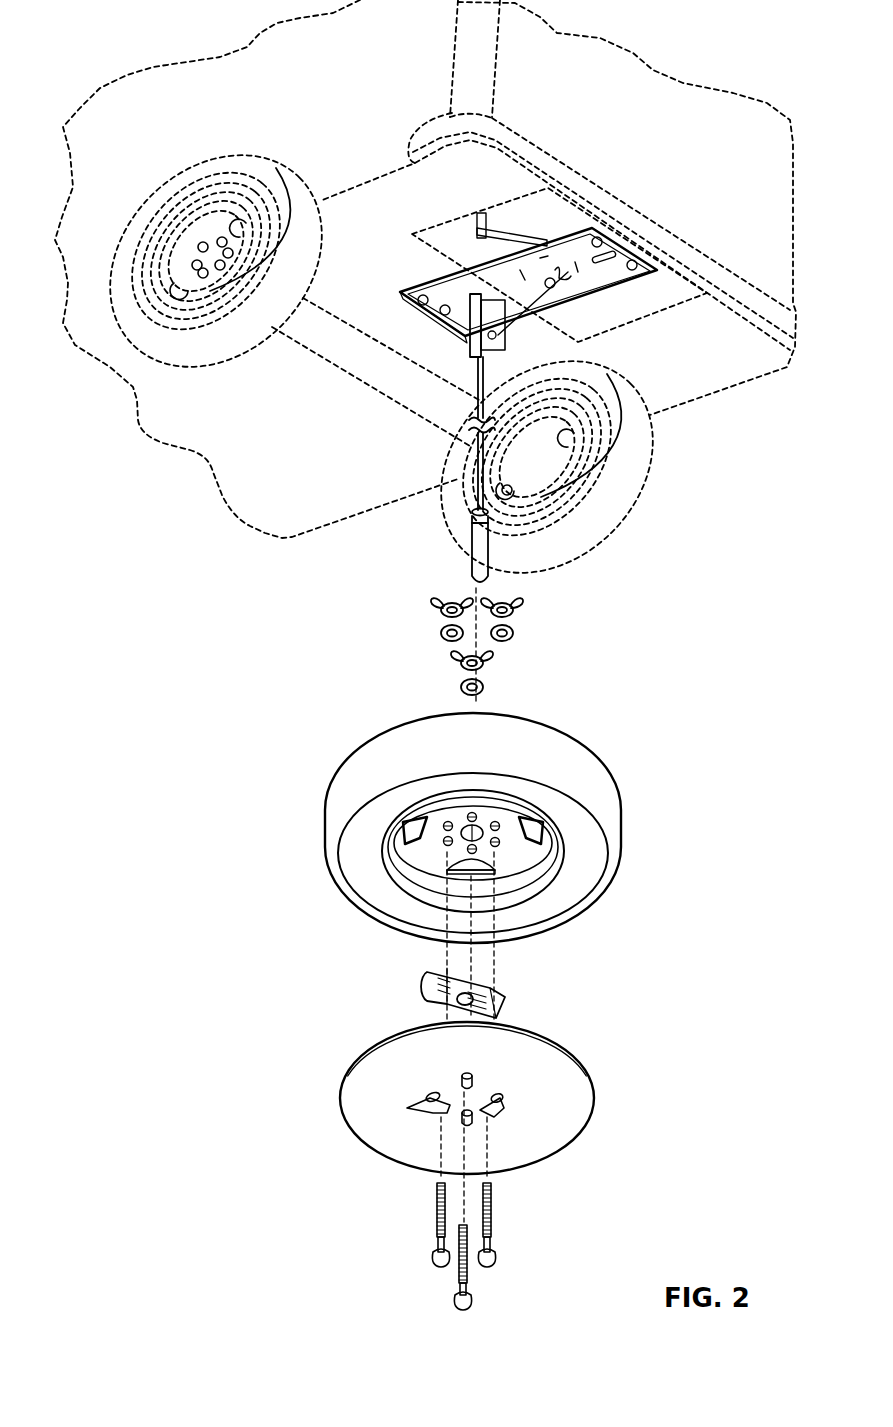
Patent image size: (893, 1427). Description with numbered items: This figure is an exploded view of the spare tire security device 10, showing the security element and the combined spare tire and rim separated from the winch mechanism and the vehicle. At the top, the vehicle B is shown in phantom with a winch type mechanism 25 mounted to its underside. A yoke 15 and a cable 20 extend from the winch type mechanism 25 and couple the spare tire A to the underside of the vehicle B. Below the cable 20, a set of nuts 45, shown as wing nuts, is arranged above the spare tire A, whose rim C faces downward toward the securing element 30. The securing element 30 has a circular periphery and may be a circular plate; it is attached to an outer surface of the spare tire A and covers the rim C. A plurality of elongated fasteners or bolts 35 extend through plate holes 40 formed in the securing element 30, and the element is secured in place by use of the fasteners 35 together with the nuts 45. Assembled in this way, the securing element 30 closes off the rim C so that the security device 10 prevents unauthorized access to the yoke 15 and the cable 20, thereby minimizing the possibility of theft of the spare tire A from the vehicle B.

The spare tire security device 10 is at (151, 894).
The yoke 15 is at (423, 992).
The cable 20 is at (480, 478).
The winch type mechanism 25 is at (642, 306).
The securing element 30 is at (565, 1105).
The bolts 35 is at (535, 1207).
The plate holes 40 is at (474, 1077).
The nuts 45 is at (556, 633).
The spare tire A is at (583, 782).
The vehicle B is at (695, 386).
The rim C is at (530, 882).